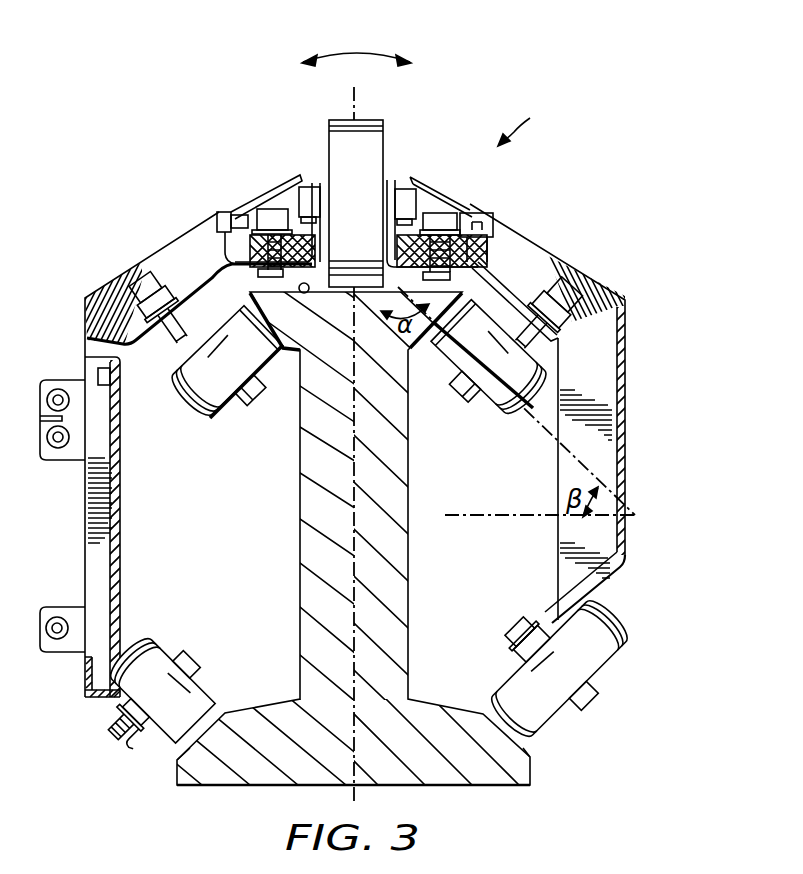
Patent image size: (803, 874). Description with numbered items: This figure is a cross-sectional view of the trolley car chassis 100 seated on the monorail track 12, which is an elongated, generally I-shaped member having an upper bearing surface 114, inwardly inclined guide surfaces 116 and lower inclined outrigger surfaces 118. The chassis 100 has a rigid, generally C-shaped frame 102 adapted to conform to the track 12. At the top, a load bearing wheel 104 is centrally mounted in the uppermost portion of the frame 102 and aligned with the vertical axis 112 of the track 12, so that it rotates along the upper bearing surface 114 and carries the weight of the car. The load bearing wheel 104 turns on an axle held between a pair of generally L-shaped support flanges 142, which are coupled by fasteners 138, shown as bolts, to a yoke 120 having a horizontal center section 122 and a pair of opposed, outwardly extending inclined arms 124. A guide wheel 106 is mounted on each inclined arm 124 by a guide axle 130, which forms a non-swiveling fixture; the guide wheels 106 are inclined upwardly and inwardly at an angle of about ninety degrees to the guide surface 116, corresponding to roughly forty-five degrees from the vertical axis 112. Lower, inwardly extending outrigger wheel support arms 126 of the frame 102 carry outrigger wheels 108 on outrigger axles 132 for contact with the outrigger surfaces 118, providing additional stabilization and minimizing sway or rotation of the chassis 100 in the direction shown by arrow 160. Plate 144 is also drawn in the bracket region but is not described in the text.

The monorail track 12 is at (298, 542).
The trolley car chassis 100 is at (522, 117).
The frame 102 is at (100, 285).
The load bearing wheel 104 is at (341, 119).
The guide wheel 106 is at (188, 407).
The outrigger wheel 108 is at (155, 648).
The vertical axis 112 is at (358, 103).
The upper bearing surface 114 is at (304, 293).
The guide surface 116 is at (290, 350).
The outrigger surface 118 is at (177, 752).
The yoke 120 is at (537, 280).
The horizontal center section 122 is at (510, 257).
The inclined arm 124 is at (153, 337).
The outrigger wheel support arm 126 is at (626, 556).
The guide axle 130 is at (242, 413).
The outrigger axle 132 is at (93, 747).
The fastener 138 is at (252, 210).
The support flange 142 is at (320, 183).
The shim plates 144 is at (278, 183).
The arrow 160 is at (332, 50).